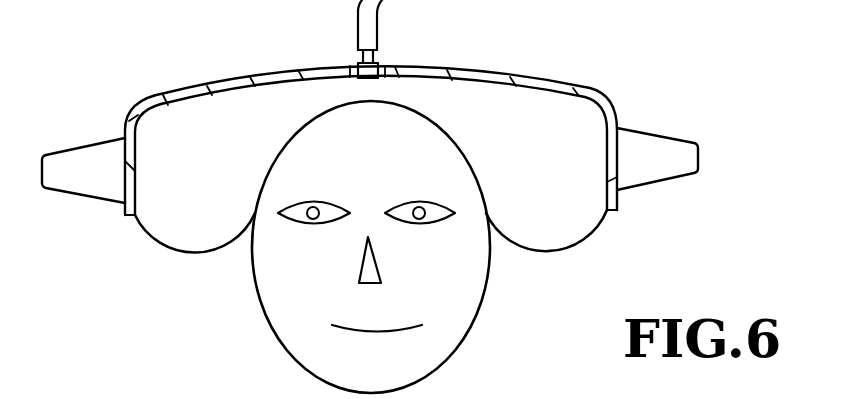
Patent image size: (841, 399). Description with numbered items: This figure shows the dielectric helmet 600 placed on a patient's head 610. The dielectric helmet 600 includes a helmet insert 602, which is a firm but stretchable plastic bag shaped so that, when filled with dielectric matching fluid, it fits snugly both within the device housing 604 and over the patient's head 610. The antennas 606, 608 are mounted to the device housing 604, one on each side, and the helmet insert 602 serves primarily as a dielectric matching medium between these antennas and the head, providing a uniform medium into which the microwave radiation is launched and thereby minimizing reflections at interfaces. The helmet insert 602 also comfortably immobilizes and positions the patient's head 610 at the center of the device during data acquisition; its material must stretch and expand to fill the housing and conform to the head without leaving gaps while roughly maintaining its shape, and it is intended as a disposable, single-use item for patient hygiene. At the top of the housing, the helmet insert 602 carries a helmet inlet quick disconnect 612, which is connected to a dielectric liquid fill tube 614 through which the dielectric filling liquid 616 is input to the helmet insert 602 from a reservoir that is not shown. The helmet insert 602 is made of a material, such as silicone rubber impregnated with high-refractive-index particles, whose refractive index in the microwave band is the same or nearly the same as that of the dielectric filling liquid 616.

The dielectric helmet 600 is at (381, 136).
The helmet insert 602 is at (223, 167).
The device housing 604 is at (232, 78).
The antenna 606 is at (88, 145).
The antenna 608 is at (655, 140).
The patient's head 610 is at (391, 167).
The helmet inlet quick disconnect 612 is at (380, 61).
The dielectric liquid fill tube 614 is at (356, 10).
The dielectric filling liquid 616 is at (548, 200).